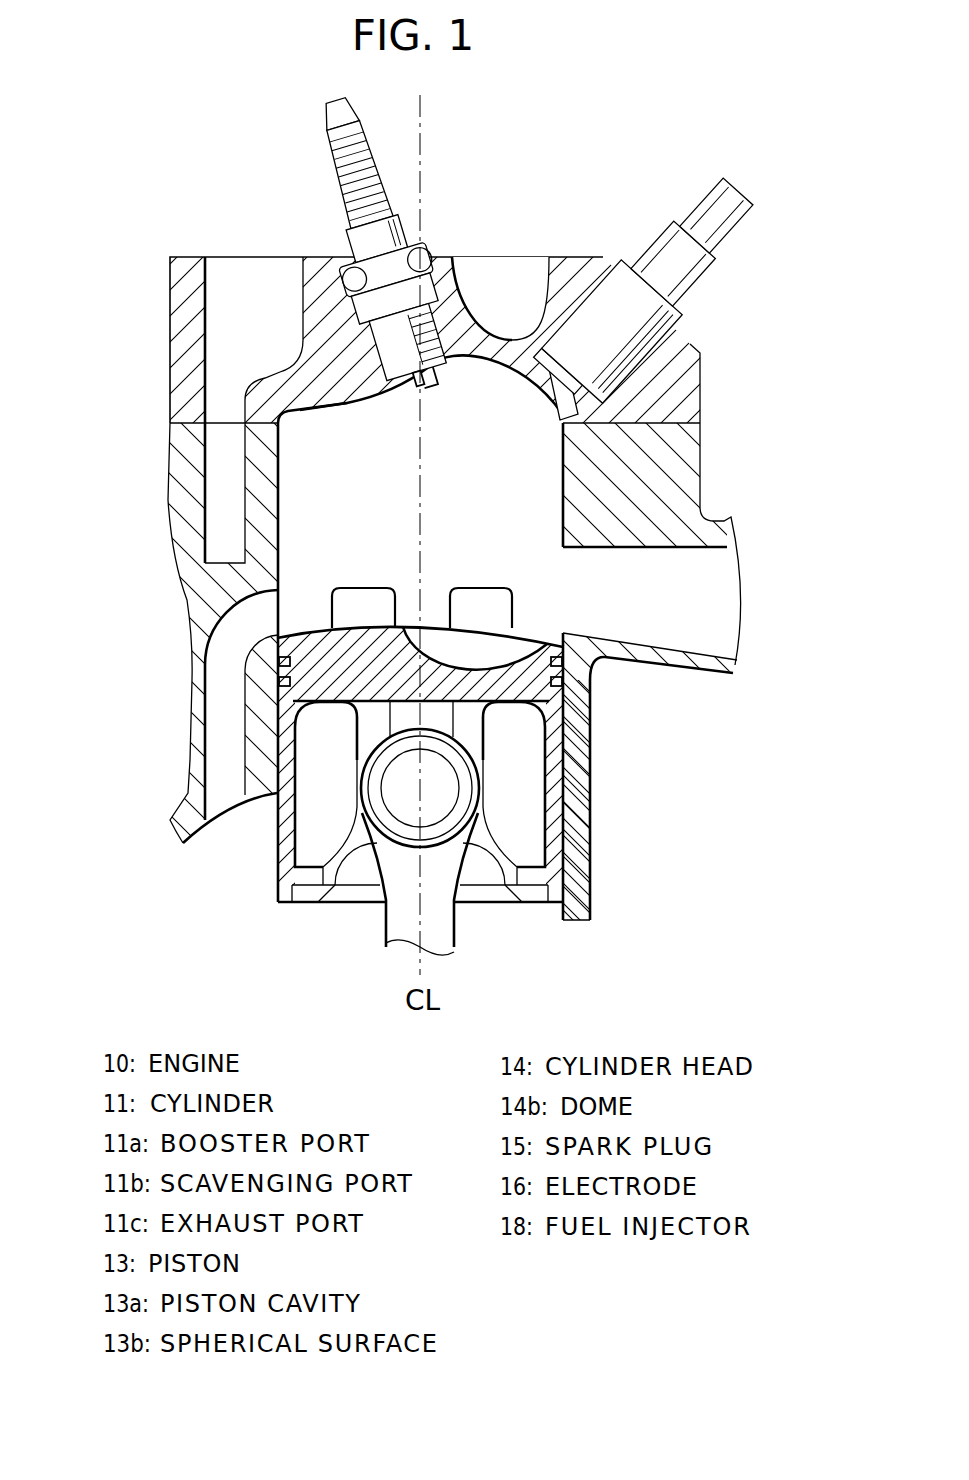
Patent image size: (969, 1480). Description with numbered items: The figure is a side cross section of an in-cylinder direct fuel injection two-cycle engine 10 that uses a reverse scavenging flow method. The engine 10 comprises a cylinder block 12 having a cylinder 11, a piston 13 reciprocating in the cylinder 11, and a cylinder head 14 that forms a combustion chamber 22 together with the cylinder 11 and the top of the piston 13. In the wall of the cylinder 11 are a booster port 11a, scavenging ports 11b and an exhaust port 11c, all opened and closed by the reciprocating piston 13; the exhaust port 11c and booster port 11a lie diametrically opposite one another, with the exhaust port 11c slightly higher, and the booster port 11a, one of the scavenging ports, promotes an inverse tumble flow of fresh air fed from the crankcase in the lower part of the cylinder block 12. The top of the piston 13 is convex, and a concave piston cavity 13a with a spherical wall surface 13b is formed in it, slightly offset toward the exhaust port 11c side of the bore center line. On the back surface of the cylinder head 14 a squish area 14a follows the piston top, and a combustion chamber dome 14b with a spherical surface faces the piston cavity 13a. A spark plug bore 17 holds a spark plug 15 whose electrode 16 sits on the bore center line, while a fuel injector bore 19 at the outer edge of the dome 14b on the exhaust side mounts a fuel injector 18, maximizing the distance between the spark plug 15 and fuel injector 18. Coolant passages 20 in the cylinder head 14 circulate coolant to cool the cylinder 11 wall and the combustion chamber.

The in-cylinder direct fuel injection 2-cycle engine 10 is at (200, 185).
The cylinder 11 is at (303, 523).
The booster port 11a is at (235, 648).
The scavenging ports 11b is at (490, 605).
The exhaust port 11c is at (605, 597).
The cylinder block 12 is at (187, 472).
The piston 13 is at (323, 823).
The piston cavity 13a is at (487, 657).
The spherical wall surface 13b is at (445, 640).
The cylinder head 14 is at (178, 297).
The squish area 14a is at (347, 403).
The combustion chamber dome 14b is at (490, 380).
The spark plug 15 is at (322, 120).
The electrode 16 is at (435, 395).
The spark plug bore 17 is at (473, 285).
The fuel injector 18 is at (722, 198).
The fuel injector bore 19 is at (610, 412).
The coolant passages 20 is at (222, 375).
The combustion chamber 22 is at (372, 413).